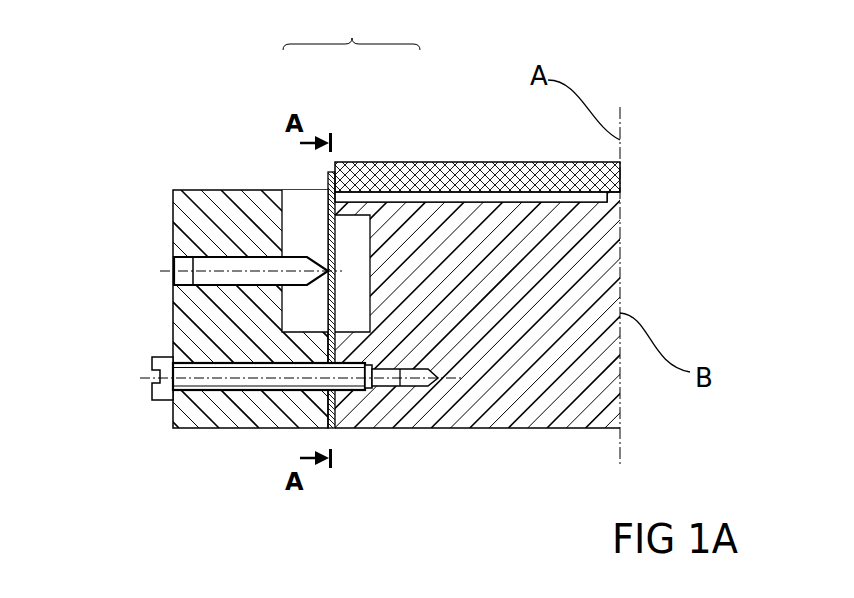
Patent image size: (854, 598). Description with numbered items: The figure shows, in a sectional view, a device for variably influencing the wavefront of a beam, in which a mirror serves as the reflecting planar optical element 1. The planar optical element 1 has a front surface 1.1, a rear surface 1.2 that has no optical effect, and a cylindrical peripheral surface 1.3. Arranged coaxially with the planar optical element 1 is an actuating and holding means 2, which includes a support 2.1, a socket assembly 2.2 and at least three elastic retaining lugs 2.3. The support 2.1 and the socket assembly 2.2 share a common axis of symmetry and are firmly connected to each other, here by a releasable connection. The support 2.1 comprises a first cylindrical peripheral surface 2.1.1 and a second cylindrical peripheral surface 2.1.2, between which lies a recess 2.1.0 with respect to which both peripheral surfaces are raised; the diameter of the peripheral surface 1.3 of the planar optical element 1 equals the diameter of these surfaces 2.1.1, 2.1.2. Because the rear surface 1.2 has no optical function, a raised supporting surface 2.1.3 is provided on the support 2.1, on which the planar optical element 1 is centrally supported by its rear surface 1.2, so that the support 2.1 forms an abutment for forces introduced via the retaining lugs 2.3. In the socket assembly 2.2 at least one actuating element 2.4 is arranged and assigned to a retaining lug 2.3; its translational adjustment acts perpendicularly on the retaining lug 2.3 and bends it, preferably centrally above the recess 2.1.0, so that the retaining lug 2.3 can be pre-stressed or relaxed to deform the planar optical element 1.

The planar optical element 1 is at (351, 30).
The front surface 1.1 is at (375, 161).
The rear surface 1.2 is at (390, 203).
The cylindrical peripheral surface 1.3 is at (334, 165).
The actuating and holding means 2 is at (152, 153).
The support 2.1 is at (445, 400).
The recess 2.1.0 is at (352, 237).
The first cylindrical peripheral surface 2.1.1 is at (327, 212).
The second cylindrical peripheral surface 2.1.2 is at (327, 409).
The raised supporting surface 2.1.3 is at (618, 183).
The socket assembly 2.2 is at (185, 207).
The elastic retaining lug 2.3 is at (320, 276).
The actuating element 2.4 is at (193, 277).